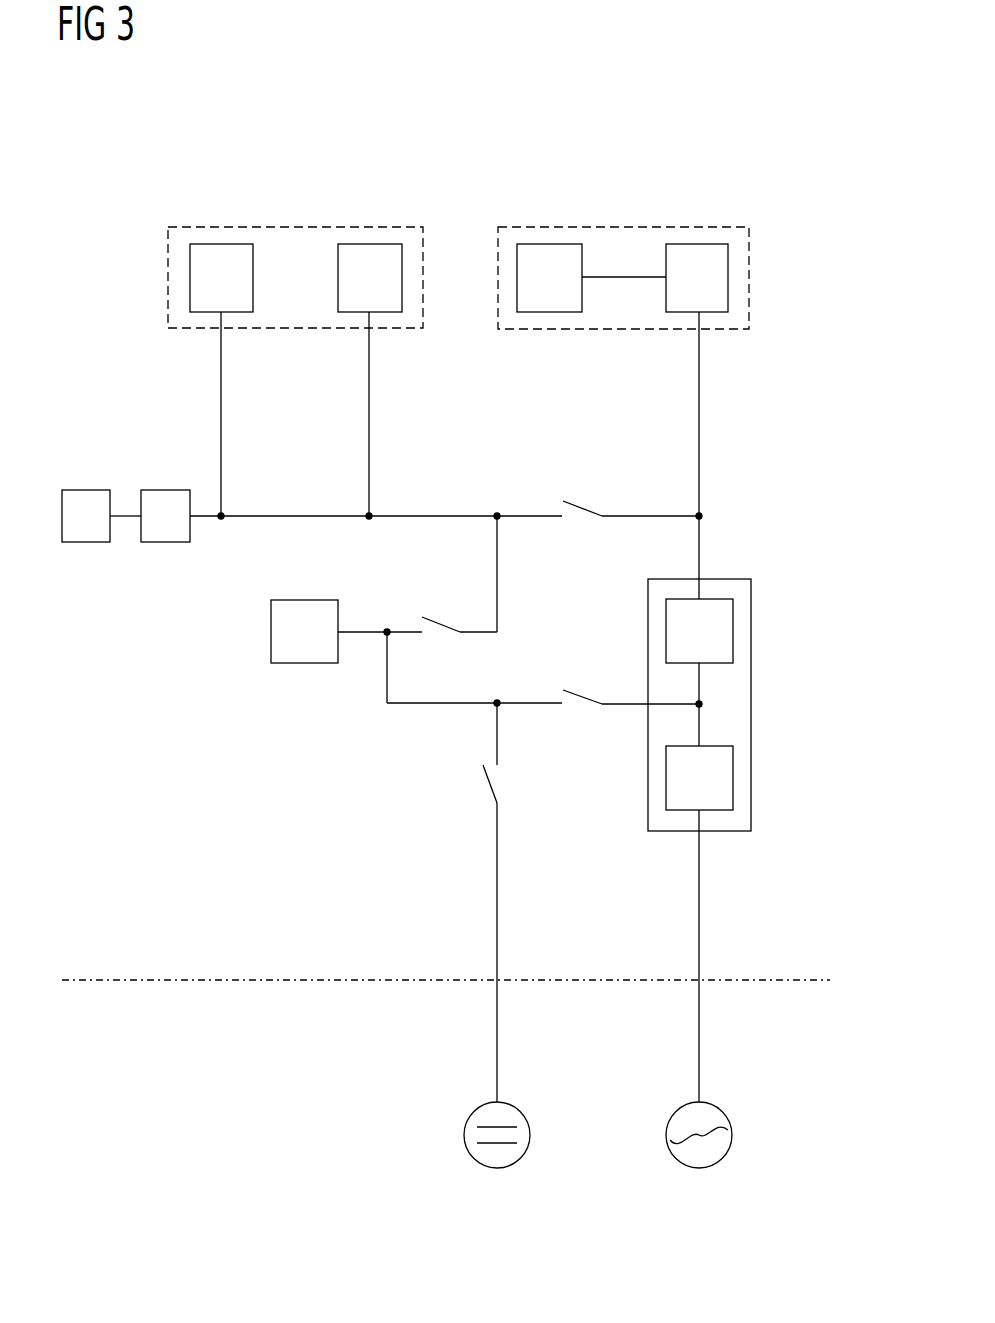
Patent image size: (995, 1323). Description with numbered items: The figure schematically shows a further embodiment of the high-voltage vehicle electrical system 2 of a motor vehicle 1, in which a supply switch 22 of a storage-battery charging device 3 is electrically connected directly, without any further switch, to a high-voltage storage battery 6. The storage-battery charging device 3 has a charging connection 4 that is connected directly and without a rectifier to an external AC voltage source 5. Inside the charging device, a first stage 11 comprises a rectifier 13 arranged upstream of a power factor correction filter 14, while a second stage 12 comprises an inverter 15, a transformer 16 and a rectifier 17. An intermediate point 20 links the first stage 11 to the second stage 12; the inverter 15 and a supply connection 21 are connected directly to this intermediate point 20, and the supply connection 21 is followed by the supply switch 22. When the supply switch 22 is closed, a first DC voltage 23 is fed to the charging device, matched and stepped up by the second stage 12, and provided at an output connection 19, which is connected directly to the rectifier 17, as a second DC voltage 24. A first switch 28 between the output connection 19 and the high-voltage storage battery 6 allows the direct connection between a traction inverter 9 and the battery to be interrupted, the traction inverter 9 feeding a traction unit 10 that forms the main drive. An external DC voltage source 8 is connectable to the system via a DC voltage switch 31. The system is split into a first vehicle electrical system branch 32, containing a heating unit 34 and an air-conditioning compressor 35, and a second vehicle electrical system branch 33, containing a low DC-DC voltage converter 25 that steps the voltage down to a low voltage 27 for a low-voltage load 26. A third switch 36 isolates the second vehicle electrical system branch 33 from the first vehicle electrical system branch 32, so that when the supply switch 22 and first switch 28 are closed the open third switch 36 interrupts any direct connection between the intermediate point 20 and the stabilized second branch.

The motor vehicle 1 is at (107, 941).
The high-voltage vehicle electrical system 2 is at (222, 717).
The storage-battery charging device 3 is at (751, 806).
The charging connection 4 is at (712, 838).
The AC voltage source 5 is at (699, 1168).
The high-voltage storage battery 6 is at (305, 600).
The DC voltage source 8 is at (497, 1168).
The traction inverter 9 is at (167, 490).
The traction unit 10 is at (86, 490).
The first stage 11 is at (733, 775).
The second stage 12 is at (733, 627).
The rectifier 13 is at (758, 763).
The power factor correction filter 14 is at (762, 742).
The inverter 15 is at (762, 597).
The transformer 16 is at (757, 615).
The rectifier 17 is at (758, 667).
The output connection 19 is at (710, 573).
The intermediate point 20 is at (703, 704).
The supply connection 21 is at (645, 707).
The supply switch 22 is at (600, 703).
The first DC voltage 23 is at (645, 702).
The second DC voltage 24 is at (690, 573).
The low DC-DC voltage converter 25 is at (698, 244).
The low-voltage load 26 is at (548, 244).
The low voltage 27 is at (637, 258).
The first switch 28 is at (438, 615).
The DC voltage switch 31 is at (483, 770).
The first vehicle electrical system branch 32 is at (297, 227).
The second vehicle electrical system branch 33 is at (598, 227).
The heating unit 34 is at (369, 244).
The air-conditioning compressor 35 is at (221, 244).
The third switch 36 is at (580, 500).